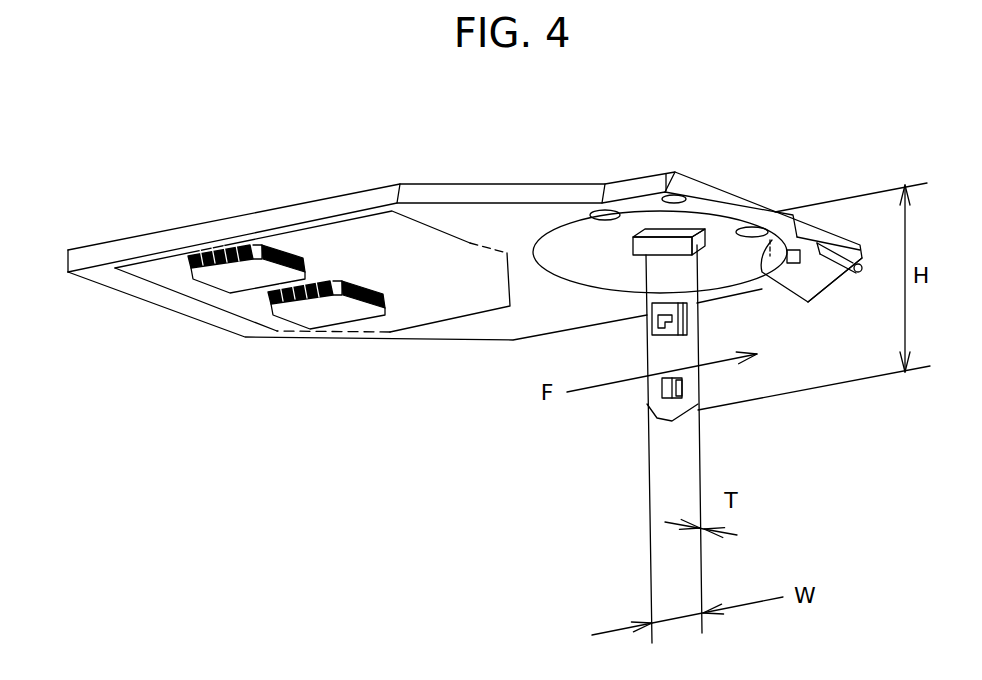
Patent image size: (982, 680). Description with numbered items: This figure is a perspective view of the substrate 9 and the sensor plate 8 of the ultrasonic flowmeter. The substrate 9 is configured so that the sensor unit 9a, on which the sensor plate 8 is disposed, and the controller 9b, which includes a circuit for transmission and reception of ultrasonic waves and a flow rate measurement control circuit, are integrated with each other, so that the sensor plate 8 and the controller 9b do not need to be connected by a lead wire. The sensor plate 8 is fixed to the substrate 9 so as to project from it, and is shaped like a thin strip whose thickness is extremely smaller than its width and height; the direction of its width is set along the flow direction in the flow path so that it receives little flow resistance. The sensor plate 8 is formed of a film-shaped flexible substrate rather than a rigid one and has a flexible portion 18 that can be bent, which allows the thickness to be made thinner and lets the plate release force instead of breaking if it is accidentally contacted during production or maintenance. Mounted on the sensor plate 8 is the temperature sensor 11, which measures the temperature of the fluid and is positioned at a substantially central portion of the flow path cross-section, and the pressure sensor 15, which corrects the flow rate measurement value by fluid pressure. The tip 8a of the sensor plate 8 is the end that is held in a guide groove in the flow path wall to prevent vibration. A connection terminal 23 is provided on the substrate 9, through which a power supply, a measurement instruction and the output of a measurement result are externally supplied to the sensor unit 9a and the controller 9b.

The sensor plate 8 is at (646, 370).
The tip 8a is at (672, 420).
The substrate 9 is at (689, 182).
The sensor unit 9a is at (552, 223).
The controller 9b is at (428, 224).
The temperature sensor 11 is at (662, 390).
The pressure sensor 15 is at (662, 308).
The flexible portion 18 is at (698, 256).
The connection terminal 23 is at (820, 288).